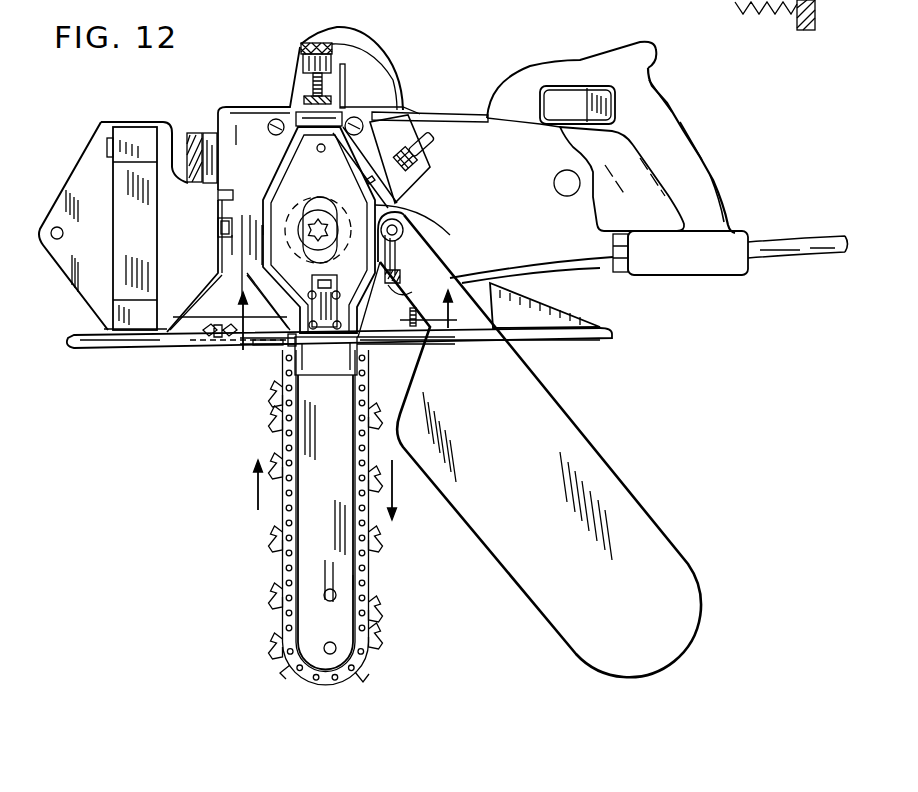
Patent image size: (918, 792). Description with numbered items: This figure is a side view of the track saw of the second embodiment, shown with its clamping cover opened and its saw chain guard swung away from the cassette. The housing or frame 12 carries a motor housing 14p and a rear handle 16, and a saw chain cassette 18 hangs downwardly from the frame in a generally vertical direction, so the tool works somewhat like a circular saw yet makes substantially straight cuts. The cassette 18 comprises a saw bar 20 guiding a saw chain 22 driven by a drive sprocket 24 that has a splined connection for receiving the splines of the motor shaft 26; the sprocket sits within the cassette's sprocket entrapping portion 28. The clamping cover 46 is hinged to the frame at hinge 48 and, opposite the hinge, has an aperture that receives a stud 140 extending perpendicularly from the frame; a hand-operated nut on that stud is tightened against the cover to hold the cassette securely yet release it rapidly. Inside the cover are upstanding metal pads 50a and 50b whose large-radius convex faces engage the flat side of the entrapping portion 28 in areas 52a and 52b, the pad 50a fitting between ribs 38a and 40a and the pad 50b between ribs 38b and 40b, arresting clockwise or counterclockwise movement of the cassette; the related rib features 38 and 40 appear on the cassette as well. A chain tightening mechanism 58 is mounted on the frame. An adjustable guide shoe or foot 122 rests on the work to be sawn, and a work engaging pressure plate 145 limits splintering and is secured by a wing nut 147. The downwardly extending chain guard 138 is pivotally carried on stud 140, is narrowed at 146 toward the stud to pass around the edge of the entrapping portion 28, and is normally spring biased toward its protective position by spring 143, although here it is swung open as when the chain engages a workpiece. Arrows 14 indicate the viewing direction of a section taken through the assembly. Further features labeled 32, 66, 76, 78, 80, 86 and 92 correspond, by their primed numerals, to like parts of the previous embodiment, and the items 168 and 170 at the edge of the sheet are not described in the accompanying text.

The housing or frame 12 is at (262, 107).
The direction arrow 14 is at (351, 331).
The motor housing 14p is at (511, 150).
The rear handle 16 is at (722, 173).
The saw chain cassette 18 is at (400, 582).
The saw bar 20 is at (339, 511).
The saw chain 22 is at (282, 568).
The drive sprocket 24 is at (327, 193).
The motor shaft 26 is at (307, 228).
The sprocket entrapping portion 28 is at (258, 233).
The slot 32 is at (305, 198).
The bracket 38 is at (392, 206).
The rib 38a is at (360, 337).
The rib 38b is at (405, 118).
The pin 40 is at (246, 210).
The rib 40a is at (293, 338).
The rib 40b is at (298, 155).
The clamping cover 46 is at (88, 290).
The cover hinge 48 is at (218, 228).
The upstanding metal pad 50a is at (141, 337).
The upstanding metal pad 50b is at (133, 130).
The engagement area 52a is at (326, 337).
The engagement area 52b is at (300, 110).
The chain tightening mechanism 58 is at (284, 38).
The support 66 is at (255, 273).
The block 76 is at (337, 142).
The screw 78 is at (280, 136).
The post 80 is at (350, 88).
The bolt 86 is at (450, 138).
The cover 92 is at (355, 108).
The adjustable guide shoe or foot 122 is at (578, 342).
The chain guard 138 is at (608, 460).
The stud 140 is at (407, 234).
The spring 143 is at (418, 292).
The work engaging pressure plate 145 is at (262, 345).
The narrowed portion of chain guard 146 is at (410, 316).
The wing nut 147 is at (215, 343).
The stop 168 is at (856, 15).
The spring 170 is at (716, 13).